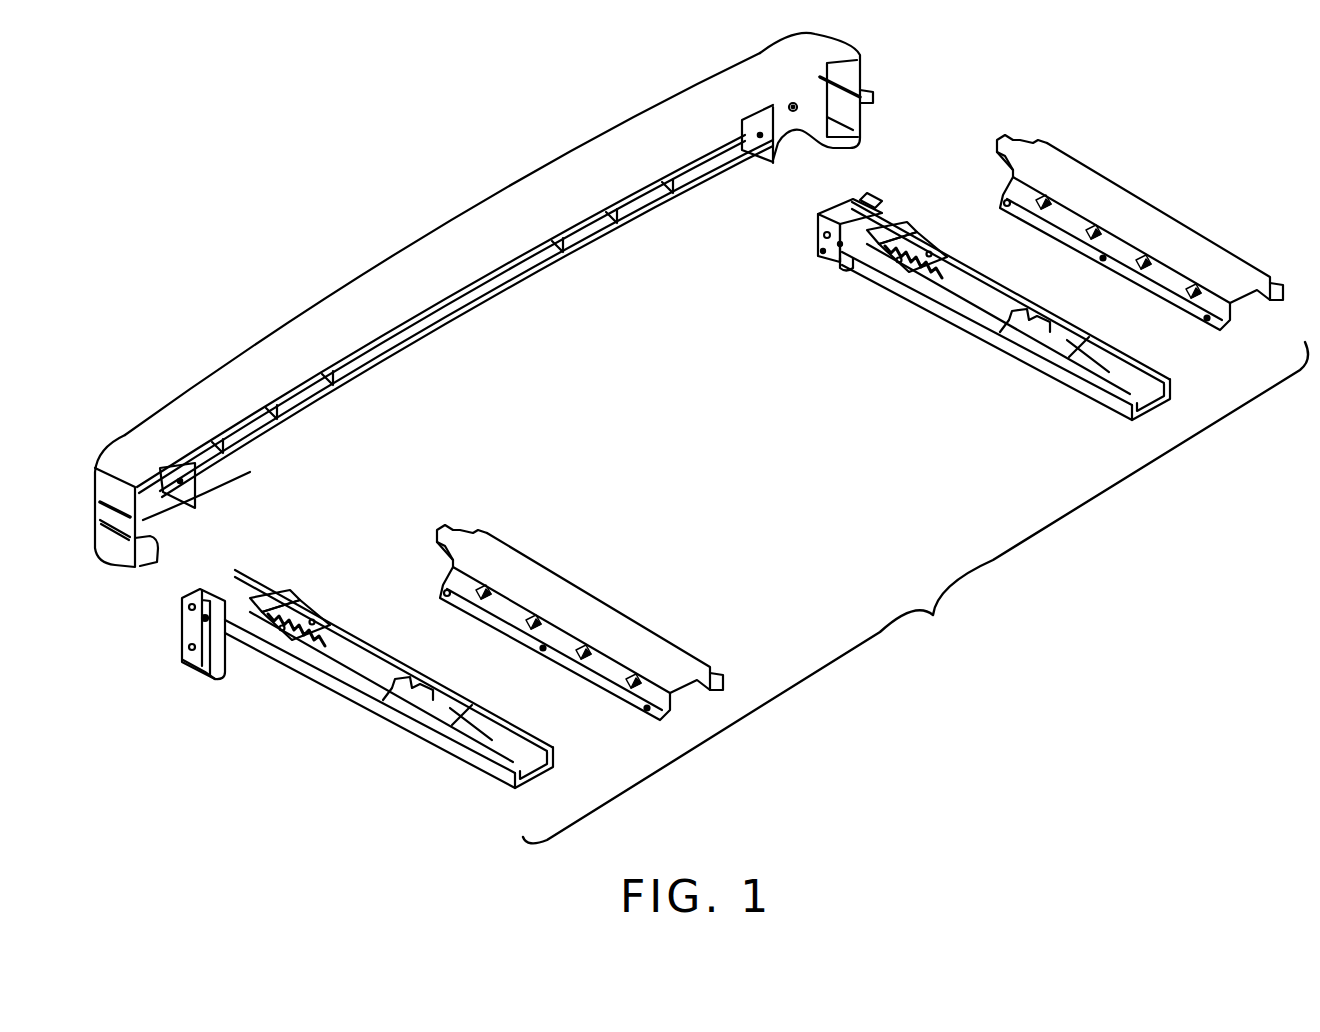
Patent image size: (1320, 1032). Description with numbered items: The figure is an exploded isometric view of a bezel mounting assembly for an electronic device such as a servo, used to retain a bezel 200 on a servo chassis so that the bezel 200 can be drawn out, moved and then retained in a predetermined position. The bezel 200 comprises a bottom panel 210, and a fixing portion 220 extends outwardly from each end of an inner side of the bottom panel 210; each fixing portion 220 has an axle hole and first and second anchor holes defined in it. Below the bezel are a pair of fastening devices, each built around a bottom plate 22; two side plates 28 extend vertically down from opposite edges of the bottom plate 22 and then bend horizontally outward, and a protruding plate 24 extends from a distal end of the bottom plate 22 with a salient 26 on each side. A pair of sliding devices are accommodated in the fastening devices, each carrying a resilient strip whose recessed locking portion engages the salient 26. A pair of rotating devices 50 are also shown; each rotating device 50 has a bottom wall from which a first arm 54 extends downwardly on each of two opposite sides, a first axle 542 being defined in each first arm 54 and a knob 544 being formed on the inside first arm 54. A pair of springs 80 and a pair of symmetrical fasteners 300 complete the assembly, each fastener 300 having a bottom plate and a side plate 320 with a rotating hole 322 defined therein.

The bottom plate 22 is at (1185, 245).
The protruding plate 24 is at (1005, 140).
The salient 26 is at (996, 148).
The side plate 28 is at (1205, 328).
The rotating device 50 is at (803, 233).
The first arm 54 is at (825, 238).
The first axle 542 is at (820, 252).
The knob 544 is at (836, 262).
The spring 80 is at (938, 245).
The bezel 200 is at (484, 300).
The bottom panel 210 is at (788, 78).
The fixing portion 220 is at (763, 148).
The fastener 300 is at (153, 664).
The side plate 320 is at (190, 665).
The rotating hole 322 is at (185, 605).